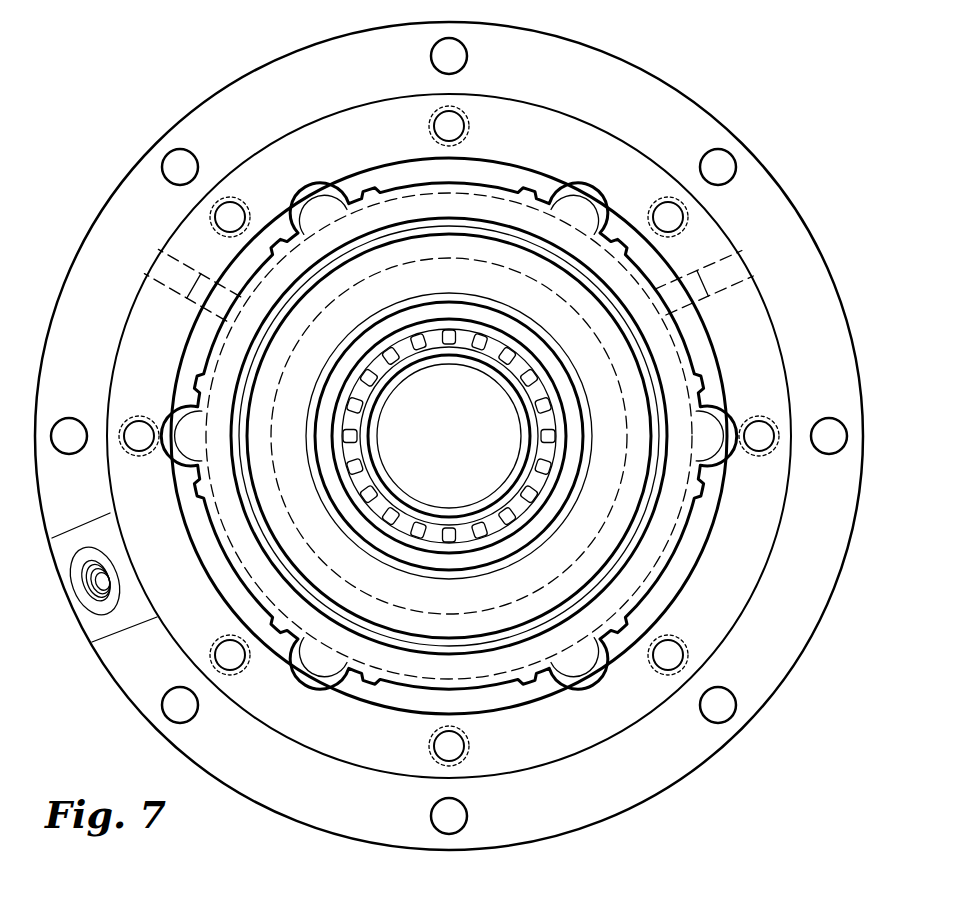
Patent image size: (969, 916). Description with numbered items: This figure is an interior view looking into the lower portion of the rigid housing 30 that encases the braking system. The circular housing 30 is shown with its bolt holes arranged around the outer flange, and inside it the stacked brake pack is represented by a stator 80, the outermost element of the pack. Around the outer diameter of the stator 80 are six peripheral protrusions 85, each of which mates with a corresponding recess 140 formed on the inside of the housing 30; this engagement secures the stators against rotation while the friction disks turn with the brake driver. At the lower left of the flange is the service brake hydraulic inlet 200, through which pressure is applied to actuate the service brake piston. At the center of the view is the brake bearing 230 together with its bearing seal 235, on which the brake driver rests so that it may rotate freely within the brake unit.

The housing 30 is at (140, 127).
The stator 80 is at (637, 277).
The peripheral protrusion 85 is at (331, 201).
The recess 140 is at (308, 208).
The service brake hydraulic inlet 200 is at (97, 583).
The brake bearing 230 is at (368, 483).
The bearing seal 235 is at (388, 394).